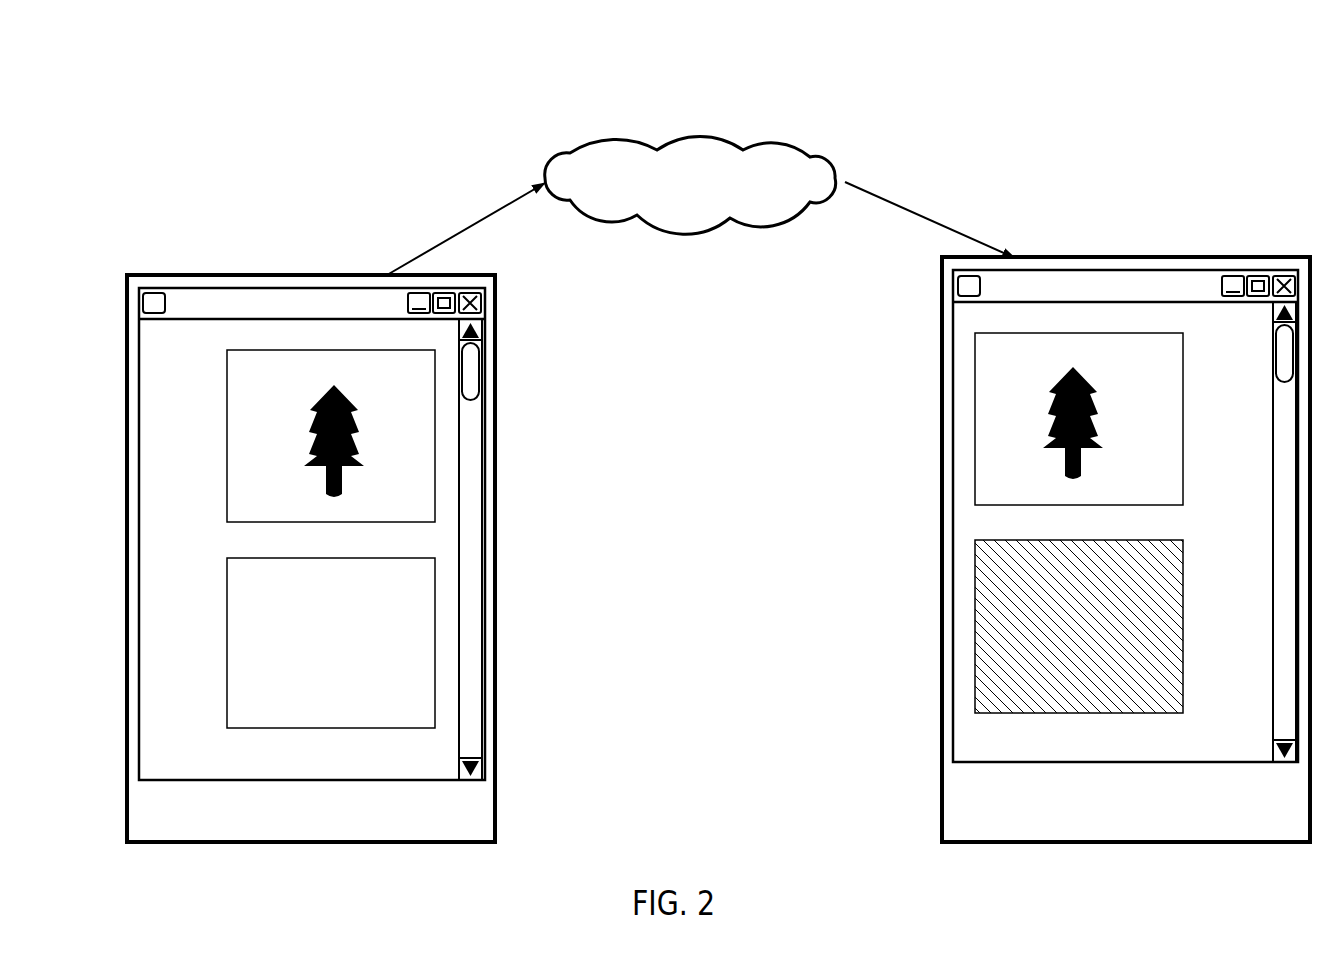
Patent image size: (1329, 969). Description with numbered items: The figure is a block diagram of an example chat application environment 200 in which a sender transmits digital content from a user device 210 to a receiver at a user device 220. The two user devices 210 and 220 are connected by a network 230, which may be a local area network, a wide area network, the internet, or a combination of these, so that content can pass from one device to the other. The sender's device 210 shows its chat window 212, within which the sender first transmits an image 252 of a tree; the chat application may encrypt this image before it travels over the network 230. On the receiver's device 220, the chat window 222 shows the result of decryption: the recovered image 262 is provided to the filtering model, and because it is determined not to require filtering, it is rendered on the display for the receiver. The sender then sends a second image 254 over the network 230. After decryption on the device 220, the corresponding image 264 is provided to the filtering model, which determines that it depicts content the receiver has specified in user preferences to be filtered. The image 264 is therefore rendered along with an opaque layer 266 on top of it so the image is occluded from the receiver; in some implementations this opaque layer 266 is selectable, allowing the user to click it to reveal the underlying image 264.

The system environment 200 is at (206, 83).
The user device 210 is at (499, 790).
The display window of first device 212 is at (334, 784).
The user device 220 is at (939, 800).
The display window of second device 222 is at (1131, 766).
The network 230 is at (680, 208).
The image 252 is at (438, 435).
The image 254 is at (438, 637).
The image 262 is at (972, 418).
The image 264 is at (972, 625).
The opaque layer 266 is at (1063, 654).